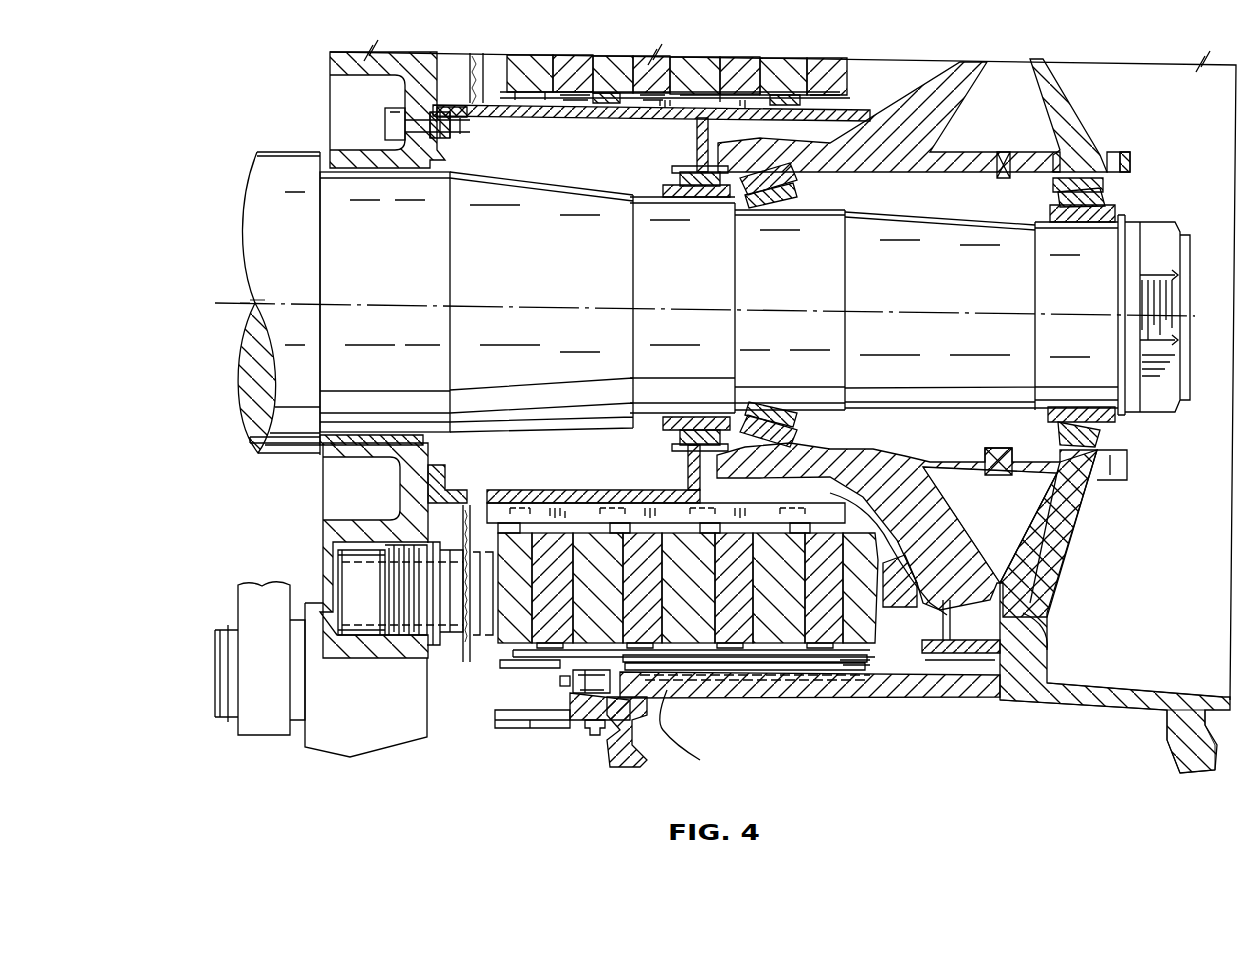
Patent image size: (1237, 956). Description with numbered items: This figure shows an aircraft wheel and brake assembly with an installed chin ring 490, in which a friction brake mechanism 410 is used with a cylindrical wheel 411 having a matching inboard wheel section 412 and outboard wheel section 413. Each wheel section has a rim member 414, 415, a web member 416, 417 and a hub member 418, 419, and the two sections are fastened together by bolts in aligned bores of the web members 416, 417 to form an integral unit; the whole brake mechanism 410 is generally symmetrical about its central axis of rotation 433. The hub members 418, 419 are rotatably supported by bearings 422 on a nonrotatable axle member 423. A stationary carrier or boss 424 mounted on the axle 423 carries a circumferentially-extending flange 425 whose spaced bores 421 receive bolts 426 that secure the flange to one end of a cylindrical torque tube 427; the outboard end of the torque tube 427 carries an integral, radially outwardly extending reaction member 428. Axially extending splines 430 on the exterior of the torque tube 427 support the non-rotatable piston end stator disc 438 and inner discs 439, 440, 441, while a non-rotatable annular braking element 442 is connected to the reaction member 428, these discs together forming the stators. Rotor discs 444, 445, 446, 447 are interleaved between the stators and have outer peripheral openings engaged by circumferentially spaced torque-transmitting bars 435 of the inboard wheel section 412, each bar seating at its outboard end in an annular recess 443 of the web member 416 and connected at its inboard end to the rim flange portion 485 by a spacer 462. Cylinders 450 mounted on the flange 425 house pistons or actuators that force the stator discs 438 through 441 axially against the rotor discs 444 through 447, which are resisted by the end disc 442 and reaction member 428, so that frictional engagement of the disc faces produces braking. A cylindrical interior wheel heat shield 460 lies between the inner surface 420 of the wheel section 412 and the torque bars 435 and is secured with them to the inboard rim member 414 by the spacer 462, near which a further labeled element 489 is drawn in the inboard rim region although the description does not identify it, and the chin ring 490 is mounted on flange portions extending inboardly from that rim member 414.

The friction brake mechanism 410 is at (470, 710).
The cylindrical wheel 411 is at (1071, 714).
The inboard wheel section 412 is at (788, 700).
The outboard wheel section 413 is at (1113, 714).
The rim member 414 is at (648, 762).
The rim member 415 is at (1180, 762).
The web member 416 is at (950, 533).
The web member 417 is at (1053, 535).
The hub member 418 is at (870, 460).
The hub member 419 is at (1090, 473).
The inner surface 420 is at (667, 690).
The bores 421 is at (387, 115).
The bearings 422 is at (793, 432).
The axle member 423 is at (942, 308).
The stationary carrier or boss 424 is at (345, 453).
The flange 425 is at (412, 483).
The bolts 426 is at (390, 127).
The torque tube 427 is at (583, 118).
The reaction member 428 is at (913, 578).
The splines 430 is at (638, 102).
The central axis of rotation 433 is at (237, 302).
The torque-transmitting bars 435 is at (757, 660).
The piston end disc or stator disc 438 is at (510, 630).
The inner disc 439 is at (618, 579).
The inner disc 440 is at (710, 579).
The inner disc 441 is at (798, 579).
The annular braking element 442 is at (867, 633).
The annular recesses 443 is at (958, 668).
The rotor disc 444 is at (569, 619).
The rotor disc 445 is at (662, 619).
The rotor disc 446 is at (732, 588).
The rotor disc 447 is at (843, 619).
The cylinders 450 is at (450, 640).
The interior wheel heat shield 460 is at (715, 688).
The spacer 462 is at (580, 685).
The rim flange portion 485 is at (573, 713).
The screw 489 is at (593, 717).
The chin ring 490 is at (503, 724).